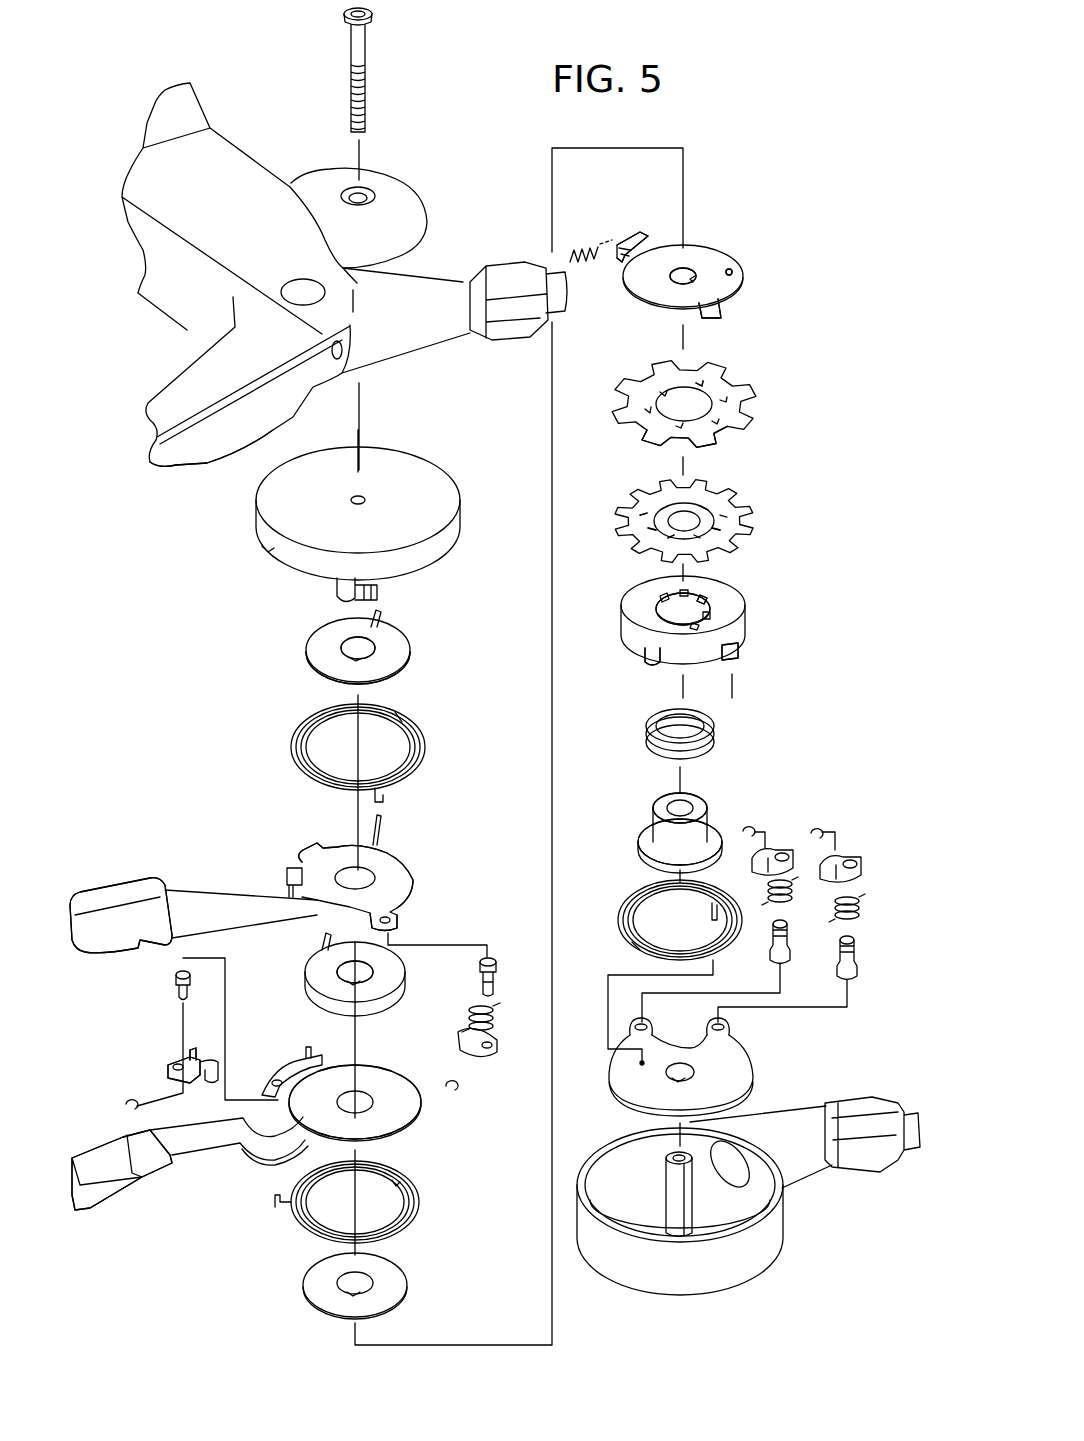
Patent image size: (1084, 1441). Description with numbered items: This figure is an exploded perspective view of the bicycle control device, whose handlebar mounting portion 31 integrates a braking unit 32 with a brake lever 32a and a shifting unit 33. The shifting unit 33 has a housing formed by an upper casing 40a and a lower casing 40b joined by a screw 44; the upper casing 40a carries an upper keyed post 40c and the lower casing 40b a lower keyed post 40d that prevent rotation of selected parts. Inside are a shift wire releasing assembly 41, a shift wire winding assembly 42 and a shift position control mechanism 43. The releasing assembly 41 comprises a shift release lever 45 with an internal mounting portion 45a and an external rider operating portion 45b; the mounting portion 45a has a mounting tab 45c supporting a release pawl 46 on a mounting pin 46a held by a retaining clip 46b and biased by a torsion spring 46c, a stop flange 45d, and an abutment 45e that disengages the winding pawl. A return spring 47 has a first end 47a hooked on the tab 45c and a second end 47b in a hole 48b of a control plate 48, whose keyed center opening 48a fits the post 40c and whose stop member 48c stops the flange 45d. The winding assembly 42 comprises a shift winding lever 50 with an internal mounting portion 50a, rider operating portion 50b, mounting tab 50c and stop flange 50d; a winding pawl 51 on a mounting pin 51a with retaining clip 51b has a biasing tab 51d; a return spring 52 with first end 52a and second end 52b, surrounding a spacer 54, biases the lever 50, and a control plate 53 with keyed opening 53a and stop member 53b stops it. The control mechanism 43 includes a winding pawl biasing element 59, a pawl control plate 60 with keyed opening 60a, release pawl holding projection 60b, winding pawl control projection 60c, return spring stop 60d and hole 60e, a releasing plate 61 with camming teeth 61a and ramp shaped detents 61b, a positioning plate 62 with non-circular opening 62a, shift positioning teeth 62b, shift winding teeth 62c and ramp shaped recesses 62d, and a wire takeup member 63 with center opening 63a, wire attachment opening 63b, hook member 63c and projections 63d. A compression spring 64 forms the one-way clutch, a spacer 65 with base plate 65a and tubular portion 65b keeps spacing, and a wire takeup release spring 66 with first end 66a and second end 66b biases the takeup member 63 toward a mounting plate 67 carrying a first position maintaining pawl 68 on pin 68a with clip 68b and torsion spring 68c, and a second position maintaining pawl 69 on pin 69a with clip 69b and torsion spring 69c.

The bicycle handlebar mounting portion 31 is at (212, 95).
The braking unit 32 is at (384, 378).
The brake lever 32a is at (173, 460).
The shifting unit 33 is at (733, 152).
The upper casing 40a is at (408, 480).
The lower casing 40b is at (748, 1255).
The upper keyed post 40c is at (337, 588).
The lower keyed post 40d is at (646, 1230).
The shift wire releasing assembly 41 is at (225, 833).
The shift wire winding assembly 42 is at (148, 1036).
The shift position control mechanism 43 is at (826, 476).
The screw 44 is at (367, 52).
The shift release lever 45 is at (87, 888).
The internal mounting portion 45a is at (343, 840).
The external rider operating portion 45b is at (95, 955).
The mounting tab 45c is at (398, 917).
The stop flange 45d is at (381, 828).
The abutment 45e is at (286, 866).
The release pawl 46 is at (490, 1058).
The mounting pin 46a is at (490, 957).
The retaining clip 46b is at (452, 1094).
The torsion spring 46c is at (494, 1008).
The shift release lever return spring 47 is at (425, 772).
The first end 47a is at (380, 797).
The second end 47b is at (414, 722).
The shift release lever control plate 48 is at (420, 648).
The center opening 48a is at (342, 648).
The hole 48b is at (396, 656).
The stop member 48c is at (384, 614).
The shift winding lever 50 is at (85, 1146).
The internal mounting portion 50a is at (392, 1093).
The external rider operating portion 50b is at (128, 1188).
The mounting tab 50c is at (272, 1082).
The stop flange 50d is at (307, 1046).
The winding pawl 51 is at (206, 1092).
The mounting pin 51a is at (178, 983).
The retaining clip 51b is at (128, 1100).
The biasing tab 51d is at (170, 1067).
The shift winding lever return spring 52 is at (290, 1182).
The first end 52a is at (273, 1202).
The second end 52b is at (417, 1194).
The shift winding lever control plate 53 is at (302, 961).
The center opening 53a is at (338, 985).
The stop member 53b is at (328, 933).
The spacer 54 is at (397, 1268).
The winding pawl biasing element 59 is at (583, 243).
The pawl control plate 60 is at (750, 302).
The center opening 60a is at (692, 270).
The release pawl holding projection 60b is at (718, 320).
The winding pawl control projection 60c is at (626, 232).
The return spring stop 60d is at (622, 258).
The hole 60e is at (733, 272).
The releasing plate 61 is at (735, 437).
The camming teeth 61a is at (748, 409).
The ramp shaped detents 61b is at (735, 366).
The positioning plate 62 is at (752, 543).
The non-circular opening 62a is at (634, 499).
The shift positioning teeth 62b is at (743, 518).
The shift winding teeth 62c is at (633, 556).
The ramp shaped recesses 62d is at (727, 501).
The wire takeup member 63 is at (758, 614).
The center opening 63a is at (640, 603).
The wire attachment opening 63b is at (653, 660).
The hook member 63c is at (742, 655).
The projections 63d is at (722, 598).
The compression spring 64 is at (646, 713).
The spacer 65 is at (641, 816).
The base plate 65a is at (645, 851).
The tubular portion 65b is at (666, 791).
The wire takeup release spring 66 is at (613, 913).
The first end 66a is at (648, 941).
The second end 66b is at (711, 914).
The mounting plate 67 is at (763, 1062).
The first position maintaining pawl 68 is at (789, 850).
The pin 68a is at (775, 940).
The retaining clip 68b is at (748, 828).
The torsion spring 68c is at (791, 899).
The second position maintaining pawl 69 is at (863, 871).
The pin 69a is at (858, 966).
The retaining clip 69b is at (820, 831).
The torsion spring 69c is at (862, 913).